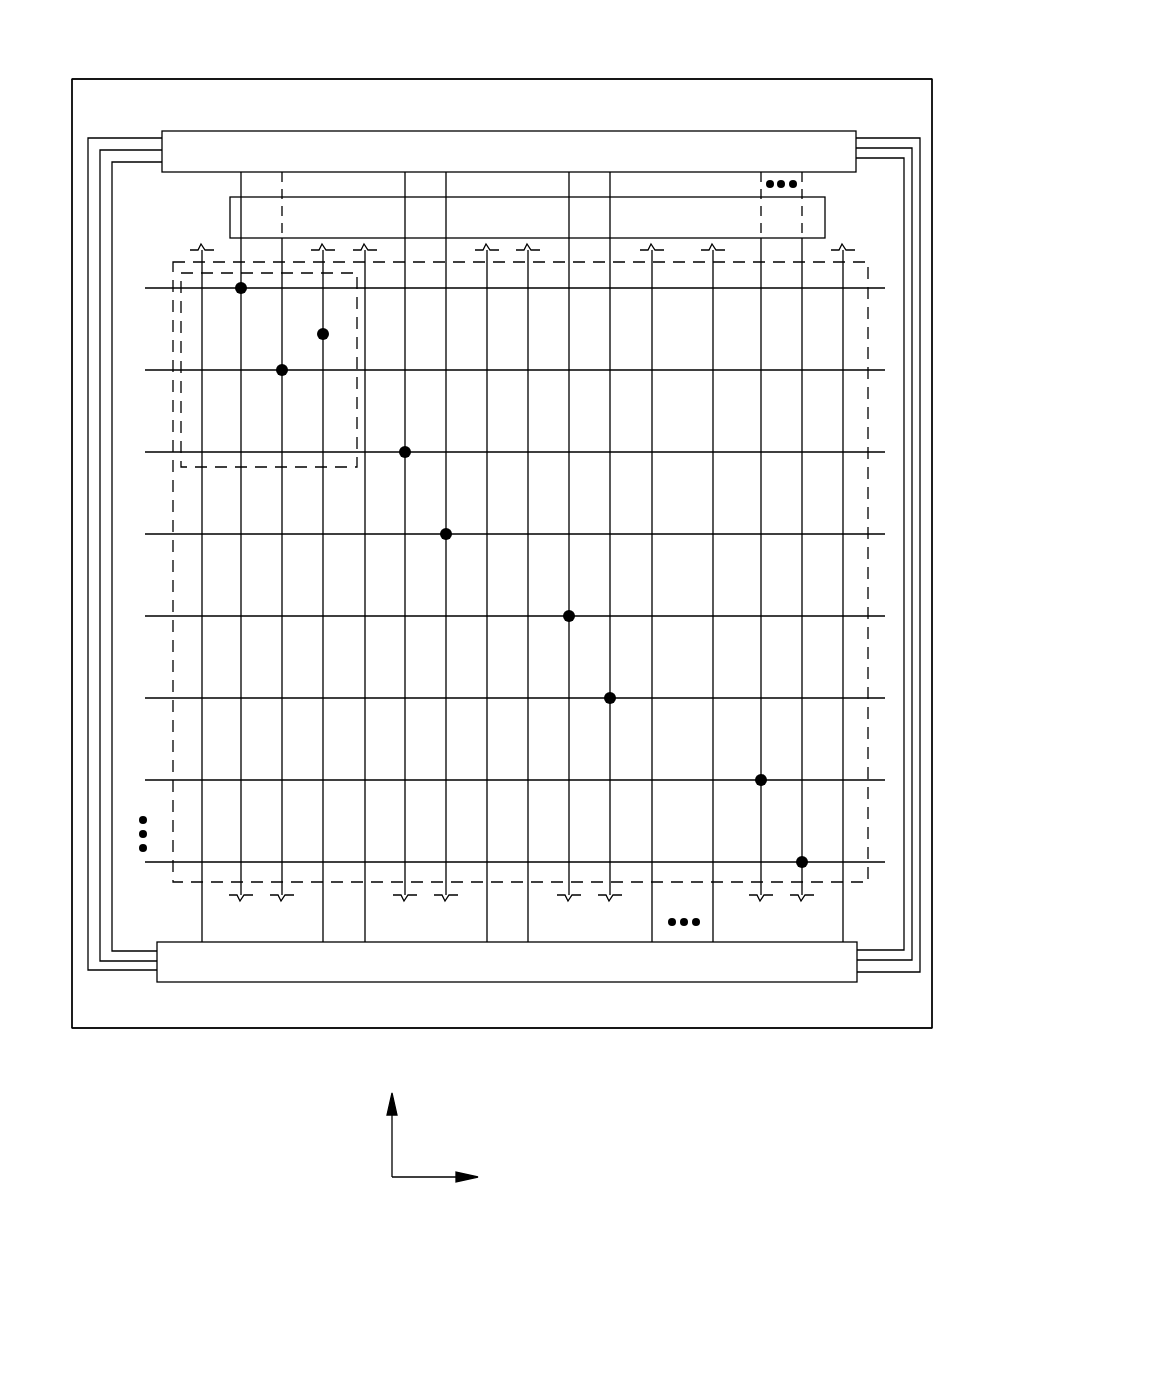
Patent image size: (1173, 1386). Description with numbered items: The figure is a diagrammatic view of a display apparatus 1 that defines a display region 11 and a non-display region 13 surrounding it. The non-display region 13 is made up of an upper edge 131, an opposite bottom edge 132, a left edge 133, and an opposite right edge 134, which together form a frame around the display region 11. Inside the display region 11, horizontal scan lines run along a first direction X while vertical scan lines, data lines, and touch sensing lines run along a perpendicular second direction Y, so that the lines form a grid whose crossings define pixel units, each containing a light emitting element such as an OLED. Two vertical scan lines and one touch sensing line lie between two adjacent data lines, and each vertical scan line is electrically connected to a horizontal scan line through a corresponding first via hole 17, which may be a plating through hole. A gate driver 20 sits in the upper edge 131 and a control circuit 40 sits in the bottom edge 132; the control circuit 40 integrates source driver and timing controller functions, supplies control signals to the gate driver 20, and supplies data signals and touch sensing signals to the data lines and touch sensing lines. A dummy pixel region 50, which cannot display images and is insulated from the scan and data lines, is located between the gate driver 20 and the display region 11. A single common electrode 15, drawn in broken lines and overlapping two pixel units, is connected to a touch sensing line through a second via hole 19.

The display apparatus 1 is at (538, 53).
The display region 11 is at (868, 262).
The non-display region 13 is at (690, 87).
The upper edge 131 is at (423, 113).
The bottom edge 132 is at (560, 928).
The left edge 133 is at (128, 738).
The right edge 134 is at (885, 735).
The common electrode 15 is at (268, 272).
The first via hole 17 is at (241, 289).
The second via hole 19 is at (323, 334).
The gate driver 20 is at (610, 135).
The control circuit 40 is at (360, 978).
The dummy pixel region 50 is at (825, 217).